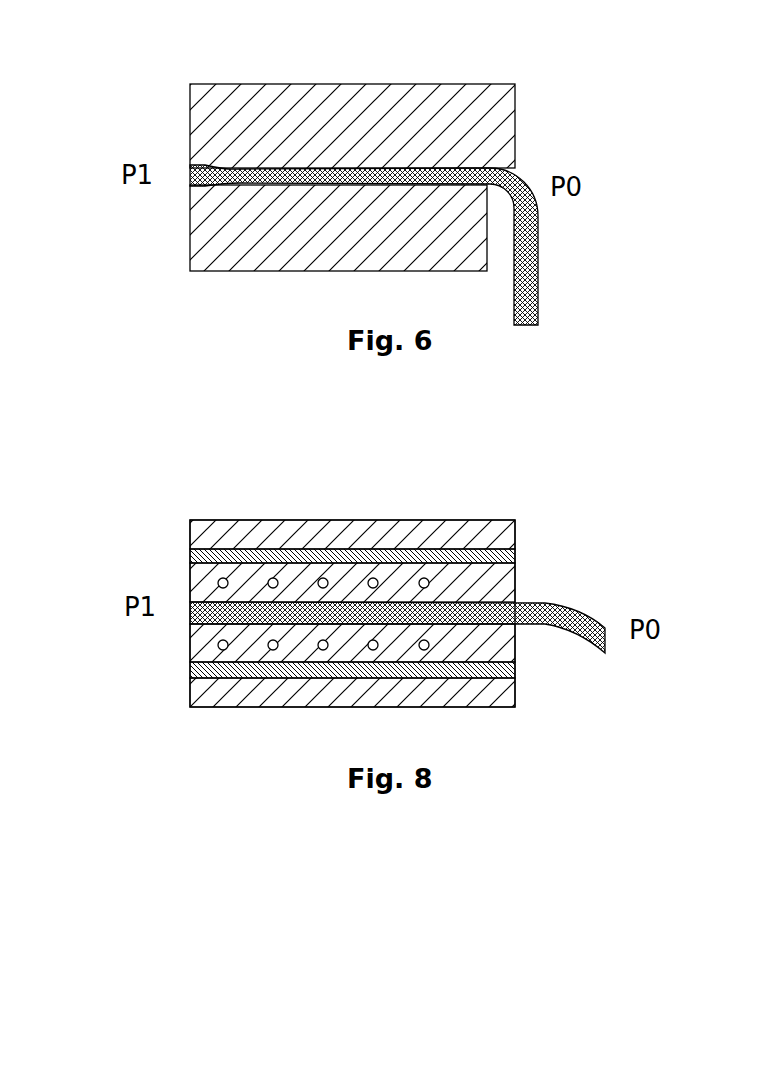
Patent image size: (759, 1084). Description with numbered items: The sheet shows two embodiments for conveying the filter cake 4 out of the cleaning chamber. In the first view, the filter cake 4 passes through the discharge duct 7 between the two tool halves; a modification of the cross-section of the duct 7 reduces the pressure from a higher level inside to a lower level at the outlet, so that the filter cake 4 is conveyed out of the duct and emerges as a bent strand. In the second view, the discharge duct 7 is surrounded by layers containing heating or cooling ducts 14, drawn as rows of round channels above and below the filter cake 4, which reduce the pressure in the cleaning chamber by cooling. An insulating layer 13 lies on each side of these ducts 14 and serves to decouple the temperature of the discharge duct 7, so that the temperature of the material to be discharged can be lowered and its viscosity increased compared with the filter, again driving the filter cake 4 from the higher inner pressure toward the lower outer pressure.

In FIG. 6, the contaminants (filter cake) 4 is at (493, 167).
In FIG. 8, the contaminants (filter cake) 4 is at (553, 613).
In FIG. 6, the discharge duct in the cleaning chamber 7 is at (380, 170).
In FIG. 8, the discharge duct in the cleaning chamber 7 is at (363, 600).
In FIG. 8, the insulating layer 13 is at (190, 552).
In FIG. 8, the heating or cooling ducts 14 is at (427, 588).